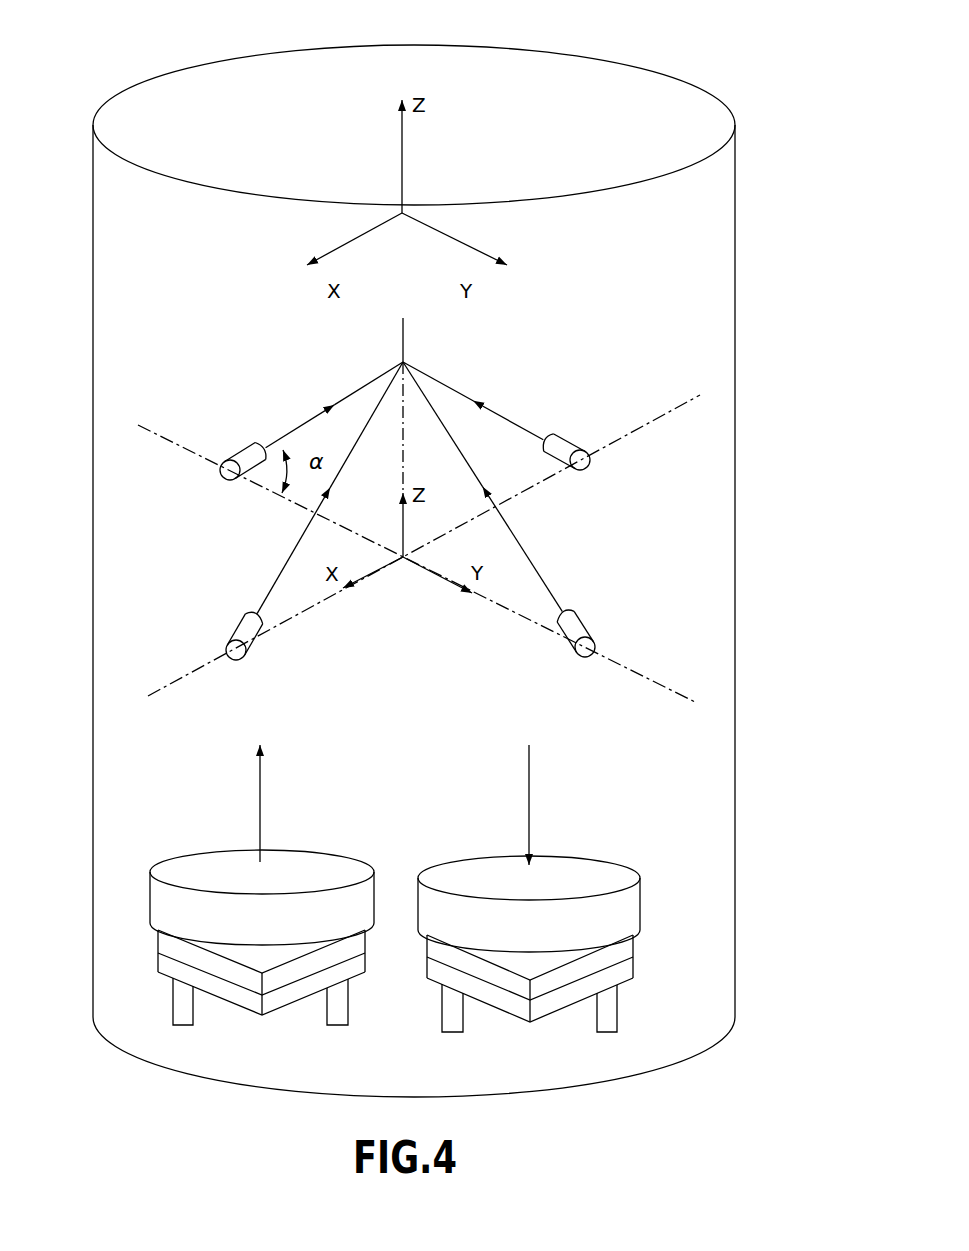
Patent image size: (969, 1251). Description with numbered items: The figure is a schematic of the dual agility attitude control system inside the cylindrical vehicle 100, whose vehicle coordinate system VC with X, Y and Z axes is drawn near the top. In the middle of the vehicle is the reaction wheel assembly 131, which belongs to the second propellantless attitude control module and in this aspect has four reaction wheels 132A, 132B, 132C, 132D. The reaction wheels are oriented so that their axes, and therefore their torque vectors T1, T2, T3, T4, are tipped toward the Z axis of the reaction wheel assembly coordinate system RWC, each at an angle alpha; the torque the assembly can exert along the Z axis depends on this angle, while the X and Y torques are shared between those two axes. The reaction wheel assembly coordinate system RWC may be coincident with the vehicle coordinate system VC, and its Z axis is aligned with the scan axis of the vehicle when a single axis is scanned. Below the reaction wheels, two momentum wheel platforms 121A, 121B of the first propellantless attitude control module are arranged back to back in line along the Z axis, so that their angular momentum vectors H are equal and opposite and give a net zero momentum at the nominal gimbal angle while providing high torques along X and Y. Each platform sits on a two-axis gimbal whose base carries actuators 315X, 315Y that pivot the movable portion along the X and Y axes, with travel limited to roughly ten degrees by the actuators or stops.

The vehicle 100 is at (736, 218).
The reaction wheel assembly 131 is at (690, 320).
The reaction wheel 132A is at (230, 456).
The reaction wheel 132B is at (576, 440).
The reaction wheel 132C is at (588, 618).
The reaction wheel 132D is at (237, 627).
The momentum wheel platform 121A is at (252, 1022).
The momentum wheel platform 121B is at (552, 1038).
The actuator 315X is at (173, 1000).
The actuator 315Y is at (337, 1027).
The vehicle coordinate system VC is at (505, 133).
The reaction wheel assembly coordinate system RWC is at (405, 587).
The torque vector T1 is at (280, 572).
The torque vector T2 is at (543, 578).
The torque vector T3 is at (507, 417).
The torque vector T4 is at (300, 422).